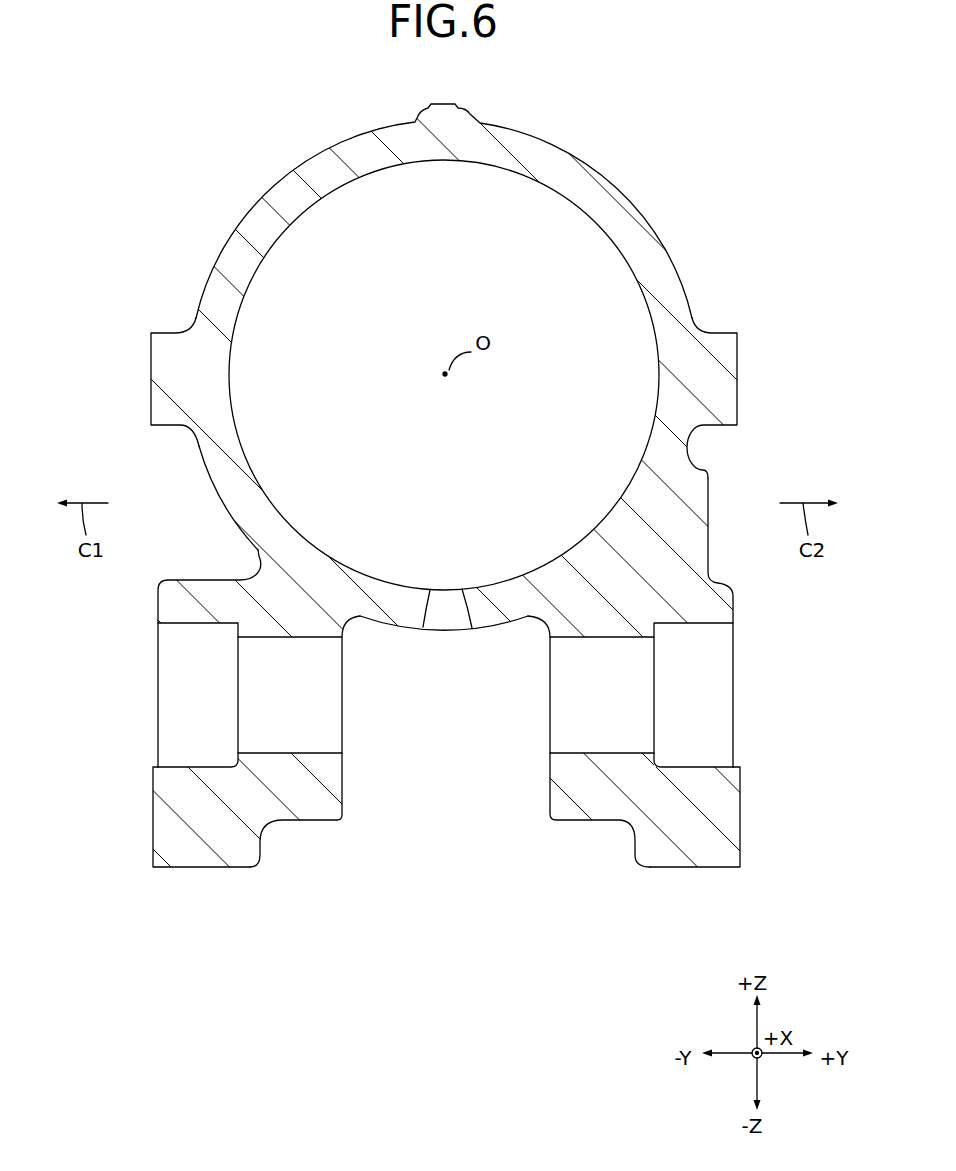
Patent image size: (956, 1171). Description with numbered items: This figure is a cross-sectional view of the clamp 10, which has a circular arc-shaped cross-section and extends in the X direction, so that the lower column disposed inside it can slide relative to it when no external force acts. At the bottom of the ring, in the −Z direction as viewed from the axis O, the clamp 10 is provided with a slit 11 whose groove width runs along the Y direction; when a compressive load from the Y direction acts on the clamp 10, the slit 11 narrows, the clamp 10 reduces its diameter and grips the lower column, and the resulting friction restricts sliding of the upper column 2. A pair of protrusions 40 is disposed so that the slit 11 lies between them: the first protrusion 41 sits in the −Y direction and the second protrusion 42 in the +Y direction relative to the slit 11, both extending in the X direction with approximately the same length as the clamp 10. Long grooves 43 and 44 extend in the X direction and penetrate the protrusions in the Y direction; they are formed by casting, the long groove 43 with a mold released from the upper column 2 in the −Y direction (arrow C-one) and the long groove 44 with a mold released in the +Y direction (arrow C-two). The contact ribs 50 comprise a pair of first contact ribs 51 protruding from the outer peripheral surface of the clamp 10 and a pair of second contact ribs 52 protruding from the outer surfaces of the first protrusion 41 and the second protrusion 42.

The upper column 2 is at (744, 206).
The clamp 10 is at (605, 200).
The slit 11 is at (440, 634).
The protrusions 40 is at (445, 706).
The first protrusion 41 is at (216, 818).
The second protrusion 42 is at (680, 817).
The long groove 43 is at (252, 690).
The long groove 44 is at (640, 690).
The contact ribs 50 is at (447, 592).
The first contact ribs 51 is at (165, 347).
The second contact ribs 52 is at (170, 809).